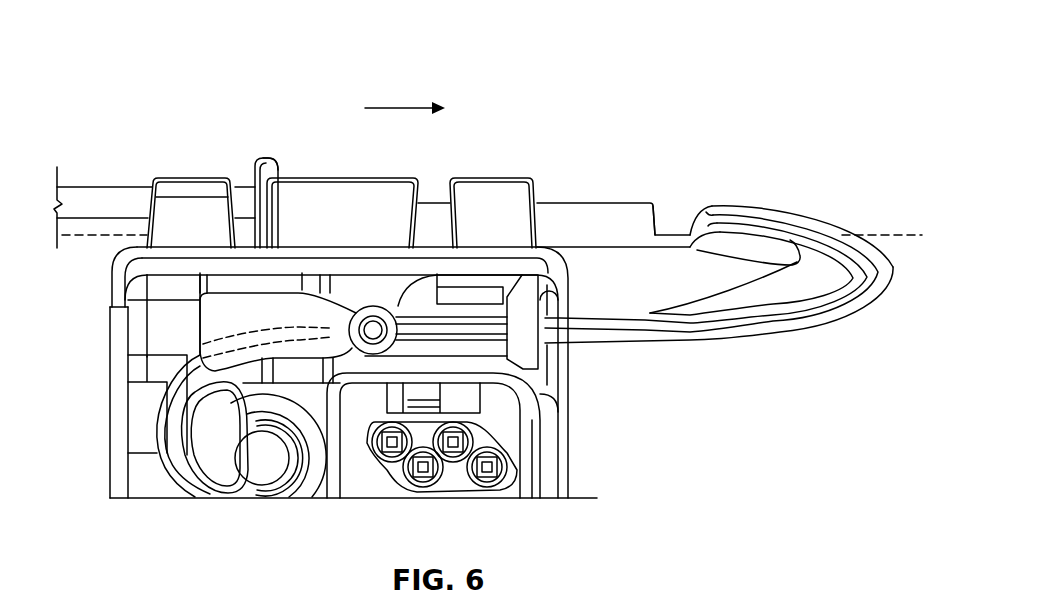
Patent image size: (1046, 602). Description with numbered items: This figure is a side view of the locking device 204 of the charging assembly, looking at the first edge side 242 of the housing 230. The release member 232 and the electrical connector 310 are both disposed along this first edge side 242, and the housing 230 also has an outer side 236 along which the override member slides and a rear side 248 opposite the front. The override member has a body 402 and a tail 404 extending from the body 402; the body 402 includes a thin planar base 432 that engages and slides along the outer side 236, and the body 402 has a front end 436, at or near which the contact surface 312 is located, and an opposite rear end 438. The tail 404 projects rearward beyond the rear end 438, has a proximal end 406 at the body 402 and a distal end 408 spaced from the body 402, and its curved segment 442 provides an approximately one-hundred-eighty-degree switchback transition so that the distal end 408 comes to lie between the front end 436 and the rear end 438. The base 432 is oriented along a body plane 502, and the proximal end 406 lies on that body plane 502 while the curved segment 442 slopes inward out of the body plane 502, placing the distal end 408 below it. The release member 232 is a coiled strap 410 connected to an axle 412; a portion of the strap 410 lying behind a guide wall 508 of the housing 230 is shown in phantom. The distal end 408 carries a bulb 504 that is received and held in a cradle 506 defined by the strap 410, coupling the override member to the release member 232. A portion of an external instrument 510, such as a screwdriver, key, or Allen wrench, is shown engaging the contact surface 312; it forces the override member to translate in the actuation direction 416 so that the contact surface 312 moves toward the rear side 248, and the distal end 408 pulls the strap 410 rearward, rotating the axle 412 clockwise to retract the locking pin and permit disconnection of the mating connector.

The locking device 204 is at (218, 62).
The housing 230 is at (150, 268).
The release member 232 is at (157, 430).
The outer side 236 is at (247, 242).
The first edge side 242 is at (180, 312).
The rear side 248 is at (570, 363).
The electrical connector 310 is at (458, 467).
The contact surface 312 is at (253, 173).
The body 402 is at (568, 204).
The tail 404 is at (793, 212).
The proximal end 406 is at (674, 214).
The distal end 408 is at (371, 362).
The strap 410 is at (172, 378).
The axle 412 is at (262, 466).
The actuation direction 416 is at (406, 108).
The base 432 is at (658, 245).
The front end 436 is at (249, 156).
The rear end 438 is at (652, 188).
The curved segment 442 is at (865, 278).
The body plane 502 is at (883, 232).
The bulb 504 is at (373, 318).
The cradle 506 is at (392, 297).
The guide wall 508 is at (302, 314).
The external instrument 510 is at (102, 195).